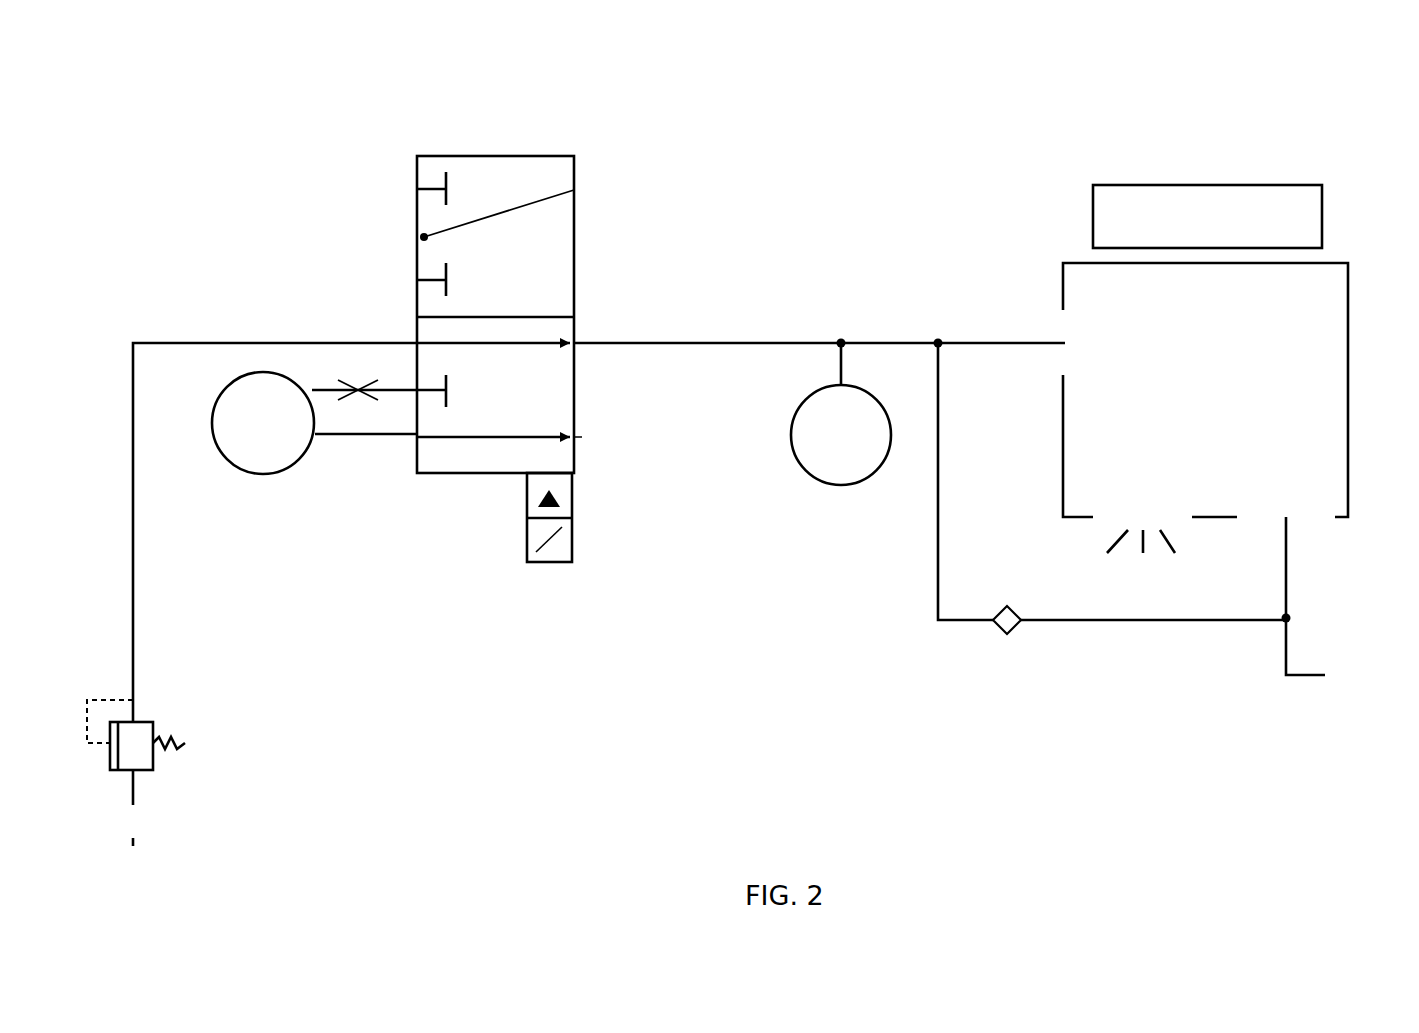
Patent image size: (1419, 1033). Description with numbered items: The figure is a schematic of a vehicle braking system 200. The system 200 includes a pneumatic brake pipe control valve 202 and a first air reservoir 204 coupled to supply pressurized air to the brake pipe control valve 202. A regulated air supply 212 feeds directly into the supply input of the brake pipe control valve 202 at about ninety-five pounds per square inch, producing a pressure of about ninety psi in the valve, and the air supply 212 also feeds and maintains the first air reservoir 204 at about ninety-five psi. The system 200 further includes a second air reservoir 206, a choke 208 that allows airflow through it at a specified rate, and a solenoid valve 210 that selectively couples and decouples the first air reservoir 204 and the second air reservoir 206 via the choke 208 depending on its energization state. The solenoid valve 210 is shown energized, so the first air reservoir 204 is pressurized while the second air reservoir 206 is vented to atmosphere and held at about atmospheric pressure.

The vehicle braking system 200 is at (267, 94).
The pneumatic brake pipe control valve 202 is at (1322, 218).
The first air reservoir 204 is at (793, 458).
The second air reservoir 206 is at (251, 474).
The choke 208 is at (352, 403).
The solenoid valve 210 is at (580, 516).
The regulated air supply 212 is at (153, 755).